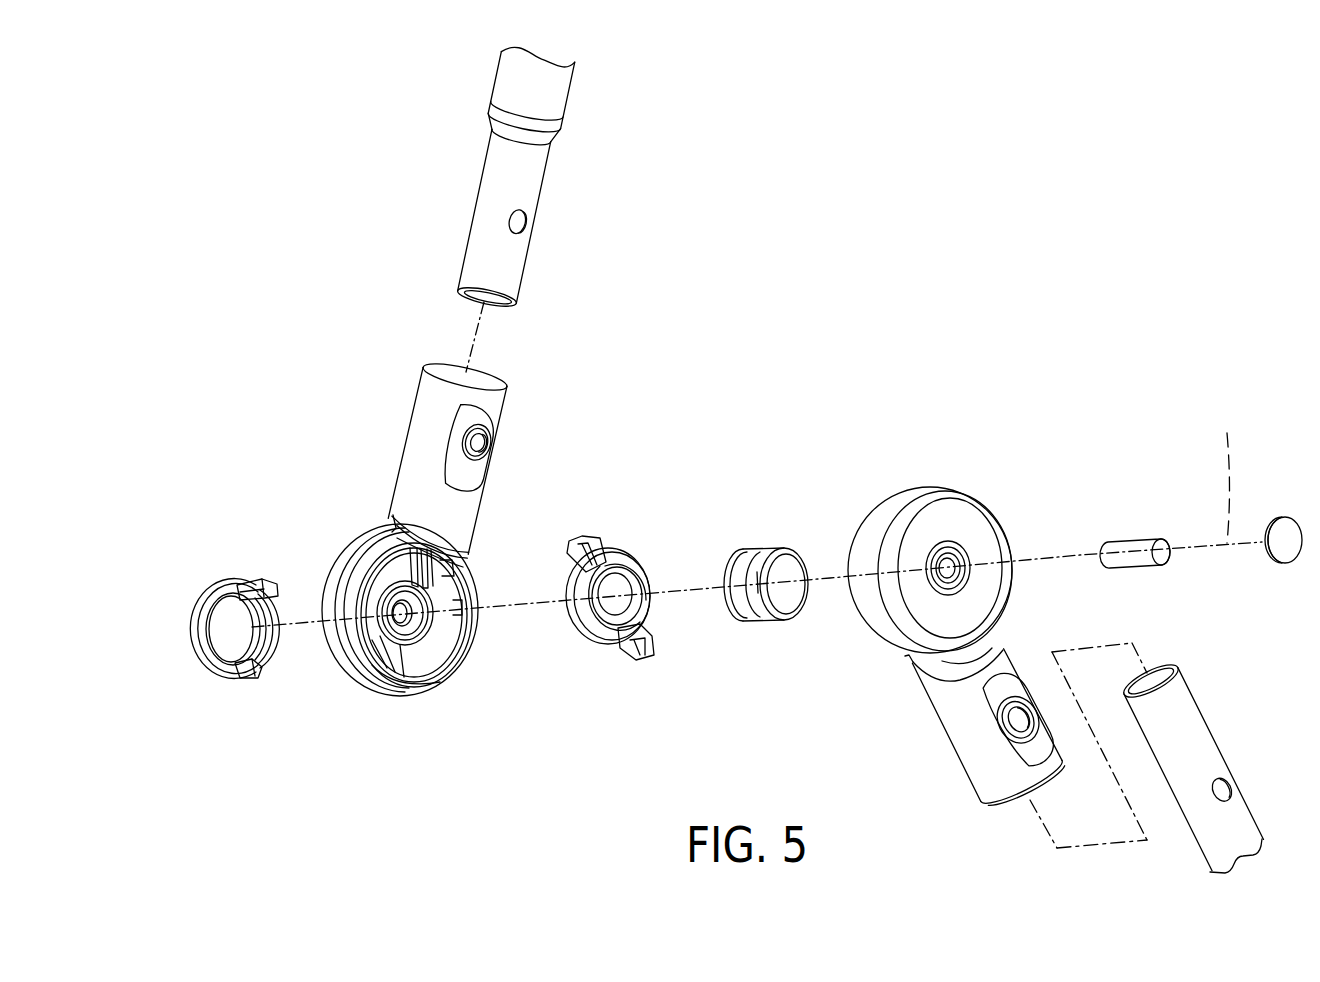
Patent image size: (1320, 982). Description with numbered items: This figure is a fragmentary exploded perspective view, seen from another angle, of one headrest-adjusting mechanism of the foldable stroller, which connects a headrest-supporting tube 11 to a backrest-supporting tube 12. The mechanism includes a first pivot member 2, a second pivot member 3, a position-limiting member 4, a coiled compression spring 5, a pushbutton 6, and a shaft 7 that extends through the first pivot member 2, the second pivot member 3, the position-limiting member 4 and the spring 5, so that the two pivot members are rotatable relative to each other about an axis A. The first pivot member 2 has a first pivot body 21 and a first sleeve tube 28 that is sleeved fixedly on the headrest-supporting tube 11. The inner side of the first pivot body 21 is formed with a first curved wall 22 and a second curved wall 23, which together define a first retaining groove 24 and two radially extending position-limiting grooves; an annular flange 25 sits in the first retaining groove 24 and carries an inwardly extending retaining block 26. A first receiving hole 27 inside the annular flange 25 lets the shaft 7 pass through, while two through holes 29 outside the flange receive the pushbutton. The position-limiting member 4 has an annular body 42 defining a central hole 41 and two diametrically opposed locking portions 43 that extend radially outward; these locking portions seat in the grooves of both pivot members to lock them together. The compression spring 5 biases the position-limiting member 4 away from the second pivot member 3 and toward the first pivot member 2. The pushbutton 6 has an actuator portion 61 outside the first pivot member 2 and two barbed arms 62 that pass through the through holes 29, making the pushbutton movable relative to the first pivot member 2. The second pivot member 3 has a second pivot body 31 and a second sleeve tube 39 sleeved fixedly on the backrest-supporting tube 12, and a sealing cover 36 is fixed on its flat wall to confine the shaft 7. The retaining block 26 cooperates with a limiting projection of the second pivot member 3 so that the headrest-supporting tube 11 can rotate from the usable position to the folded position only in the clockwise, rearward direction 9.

The clockwise direction 9 is at (586, 109).
The headrest-supporting tube 11 is at (483, 221).
The first sleeve tube 28 is at (435, 400).
The first pivot member 2 is at (407, 557).
The first pivot body 21 is at (363, 678).
The second curved wall 23 is at (370, 584).
The annular flange 25 is at (385, 617).
The retaining block 26 is at (412, 606).
The through holes 29 is at (402, 573).
The first curved wall 22 is at (440, 618).
The first retaining groove 24 is at (430, 636).
The first receiving hole 27 is at (425, 653).
The pushbutton 6 is at (224, 613).
The actuator portion 61 is at (222, 642).
The barbed arms 62 is at (262, 580).
The position-limiting member 4 is at (616, 600).
The central hole 41 is at (620, 585).
The annular body 42 is at (577, 615).
The locking portions 43 is at (580, 545).
The coiled compression spring 5 is at (765, 547).
The second pivot member 3 is at (947, 603).
The second pivot body 31 is at (967, 520).
The second sleeve tube 39 is at (978, 764).
The shaft 7 is at (1128, 545).
The axis A is at (1225, 472).
The sealing cover 36 is at (1285, 528).
The backrest-supporting tube 12 is at (1183, 714).